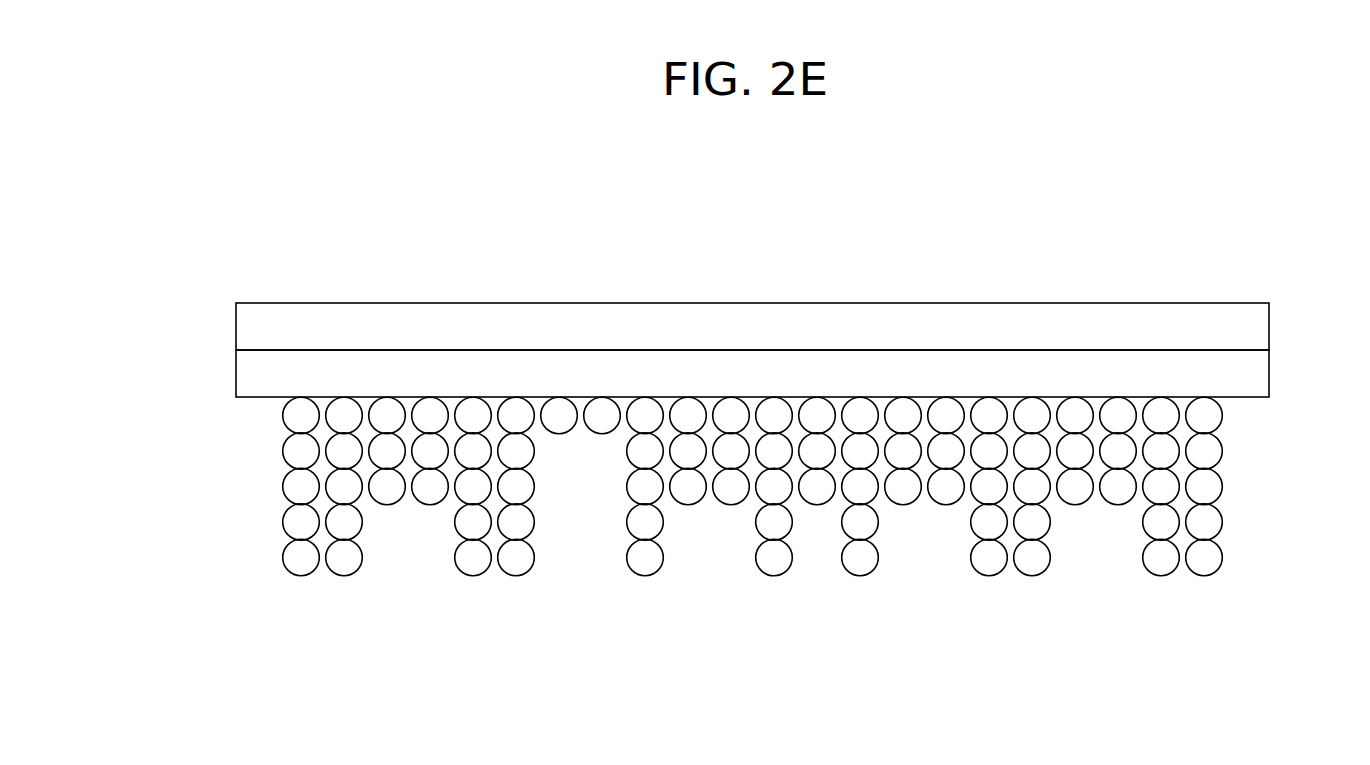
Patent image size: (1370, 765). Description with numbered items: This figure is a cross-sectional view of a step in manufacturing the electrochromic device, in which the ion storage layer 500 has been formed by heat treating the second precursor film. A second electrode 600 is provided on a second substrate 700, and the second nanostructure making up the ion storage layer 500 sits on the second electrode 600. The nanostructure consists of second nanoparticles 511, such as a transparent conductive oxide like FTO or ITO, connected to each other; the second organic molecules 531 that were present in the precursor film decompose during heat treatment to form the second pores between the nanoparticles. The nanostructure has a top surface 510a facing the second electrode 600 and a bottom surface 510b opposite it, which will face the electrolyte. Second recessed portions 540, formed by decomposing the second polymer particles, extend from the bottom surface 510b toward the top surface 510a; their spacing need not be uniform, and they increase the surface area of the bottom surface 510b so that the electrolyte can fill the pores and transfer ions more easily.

The second substrate 700 is at (245, 325).
The second electrode 600 is at (245, 375).
The ion storage layer 500 is at (776, 512).
The second nanoparticles 511 is at (1212, 450).
The second organic molecules 531 is at (1182, 504).
The top surface 510a is at (1203, 398).
The bottom surface 510b is at (1203, 577).
The second recessed portion 540 is at (1075, 504).